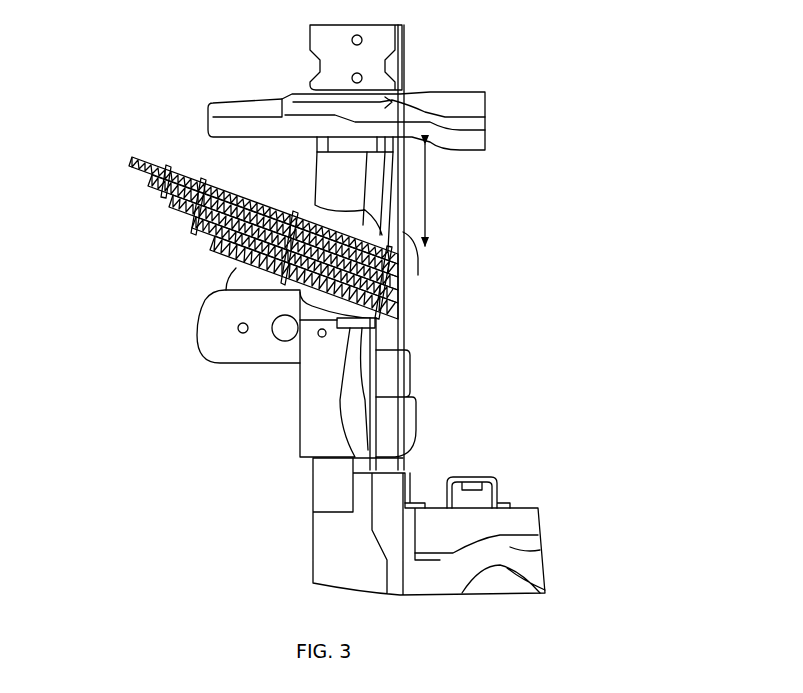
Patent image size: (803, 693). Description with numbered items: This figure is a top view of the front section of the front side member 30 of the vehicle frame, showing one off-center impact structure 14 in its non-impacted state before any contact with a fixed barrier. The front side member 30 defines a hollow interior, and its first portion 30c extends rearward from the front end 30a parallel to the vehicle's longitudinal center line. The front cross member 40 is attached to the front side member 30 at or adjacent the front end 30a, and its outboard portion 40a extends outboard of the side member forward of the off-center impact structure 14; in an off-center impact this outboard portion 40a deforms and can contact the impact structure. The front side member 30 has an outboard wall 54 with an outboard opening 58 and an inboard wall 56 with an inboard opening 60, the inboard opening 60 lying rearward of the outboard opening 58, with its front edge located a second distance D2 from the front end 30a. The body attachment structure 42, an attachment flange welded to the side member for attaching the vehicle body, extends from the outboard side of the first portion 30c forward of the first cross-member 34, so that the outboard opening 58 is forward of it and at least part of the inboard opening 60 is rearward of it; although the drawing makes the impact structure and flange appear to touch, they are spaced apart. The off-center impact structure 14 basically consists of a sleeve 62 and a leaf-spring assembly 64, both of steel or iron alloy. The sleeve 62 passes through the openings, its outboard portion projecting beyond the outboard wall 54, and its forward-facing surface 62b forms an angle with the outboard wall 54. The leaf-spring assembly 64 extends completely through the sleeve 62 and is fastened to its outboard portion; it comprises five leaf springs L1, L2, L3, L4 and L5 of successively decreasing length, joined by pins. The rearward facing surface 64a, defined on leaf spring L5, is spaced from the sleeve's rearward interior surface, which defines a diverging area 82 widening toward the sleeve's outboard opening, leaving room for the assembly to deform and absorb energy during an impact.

The front side member 30 is at (407, 178).
The front end of the front side member 30a is at (380, 25).
The first portion of the front side member 30c is at (421, 256).
The front cross member 40 is at (465, 100).
The outboard portion of the front cross member 40a is at (237, 110).
The second distance D2 is at (451, 195).
The leaf-spring assembly 64 is at (141, 154).
The leaf spring L1 is at (145, 168).
The leaf spring L2 is at (150, 180).
The leaf spring L3 is at (171, 203).
The leaf spring L4 is at (194, 223).
The leaf spring L5 is at (212, 246).
The off-center impact structure 14 is at (203, 241).
The rearward facing surface of the leaf-spring assembly 64a is at (222, 264).
The sleeve 62 is at (243, 194).
The forward-facing surface of the sleeve 62b is at (259, 213).
The inboard opening 60 is at (400, 310).
The body attachment structure 42 is at (215, 346).
The outboard opening 58 is at (256, 294).
The diverging area 82 is at (224, 306).
The outboard wall 54 is at (300, 417).
The inboard wall 56 is at (412, 345).
The first cross-member 34 is at (512, 548).